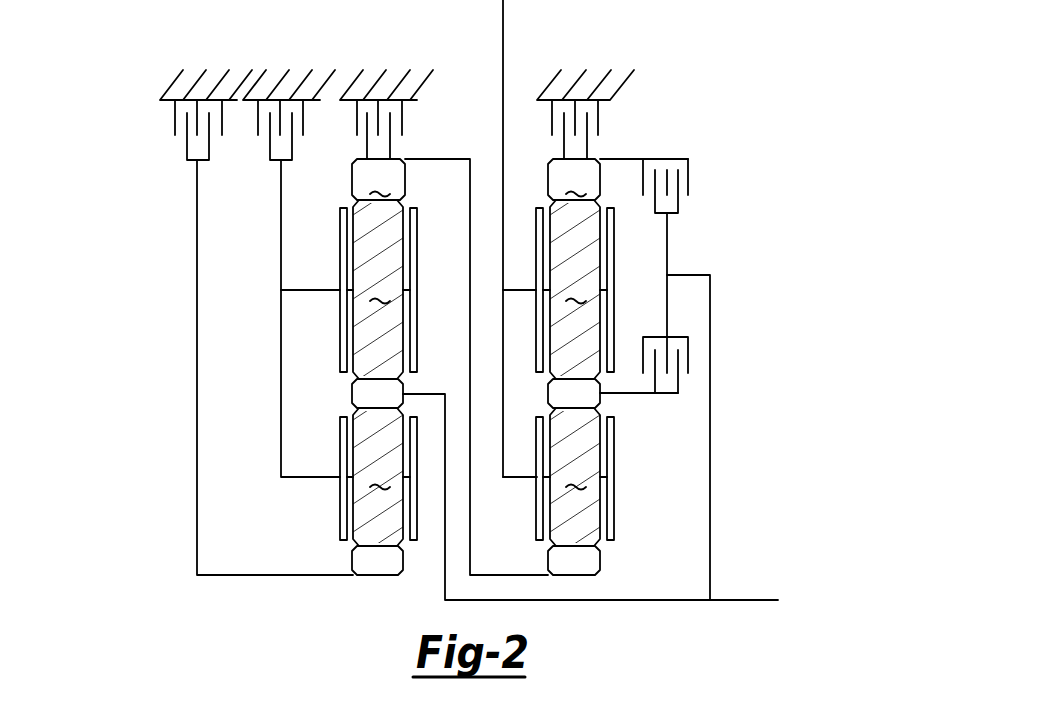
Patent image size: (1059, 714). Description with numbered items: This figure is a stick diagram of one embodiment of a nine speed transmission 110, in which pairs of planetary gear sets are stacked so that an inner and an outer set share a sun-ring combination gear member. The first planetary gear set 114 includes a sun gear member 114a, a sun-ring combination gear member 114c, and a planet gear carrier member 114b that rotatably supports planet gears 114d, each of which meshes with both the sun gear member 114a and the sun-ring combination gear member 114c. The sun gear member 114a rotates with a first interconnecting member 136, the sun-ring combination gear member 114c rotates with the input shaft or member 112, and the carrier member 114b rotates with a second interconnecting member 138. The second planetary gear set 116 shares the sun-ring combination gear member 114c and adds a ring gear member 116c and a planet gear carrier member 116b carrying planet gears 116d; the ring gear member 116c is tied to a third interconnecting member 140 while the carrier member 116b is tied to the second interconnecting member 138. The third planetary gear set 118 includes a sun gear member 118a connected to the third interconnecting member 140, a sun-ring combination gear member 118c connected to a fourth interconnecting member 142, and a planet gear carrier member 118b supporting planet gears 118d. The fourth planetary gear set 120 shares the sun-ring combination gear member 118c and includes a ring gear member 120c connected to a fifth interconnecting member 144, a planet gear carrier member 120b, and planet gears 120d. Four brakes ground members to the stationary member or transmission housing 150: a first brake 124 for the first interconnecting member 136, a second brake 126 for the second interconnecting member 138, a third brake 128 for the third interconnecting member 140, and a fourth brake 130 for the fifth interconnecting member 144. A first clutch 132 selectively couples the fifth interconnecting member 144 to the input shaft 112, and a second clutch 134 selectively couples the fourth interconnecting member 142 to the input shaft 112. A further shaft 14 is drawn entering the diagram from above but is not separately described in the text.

The input shaft 14 is at (533, 0).
The nine speed transmission 110 is at (733, 39).
The input shaft or member 112 is at (747, 600).
The first planetary gear set 114 is at (333, 520).
The sun gear member 114a is at (365, 561).
The planet gear carrier member 114b is at (340, 507).
The sun-ring combination gear member 114c is at (368, 395).
The planet gears 114d is at (378, 487).
The second planetary gear set 116 is at (322, 285).
The planet gear carrier member 116b is at (340, 272).
The ring gear member 116c is at (378, 179).
The planet gears 116d is at (345, 296).
The third planetary gear set 118 is at (588, 525).
The sun gear member 118a is at (590, 562).
The planet gear carrier member 118b is at (537, 502).
The sun-ring combination gear member 118c is at (590, 398).
The planet gears 118d is at (555, 487).
The fourth planetary gear set 120 is at (604, 240).
The planet gear carrier member 120b is at (613, 280).
The ring gear member 120c is at (574, 179).
The planet gears 120d is at (555, 296).
The first brake 124 is at (175, 115).
The second brake 126 is at (258, 122).
The third brake 128 is at (357, 117).
The fourth brake 130 is at (600, 113).
The first clutch 132 is at (688, 175).
The second clutch 134 is at (688, 353).
The first shaft or interconnecting member 136 is at (197, 495).
The second shaft or interconnecting member 138 is at (281, 443).
The third shaft or interconnecting member 140 is at (445, 158).
The fourth shaft or interconnecting member 142 is at (640, 396).
The fifth shaft or interconnecting member 144 is at (677, 157).
The stationary member or transmission housing 150 is at (172, 86).